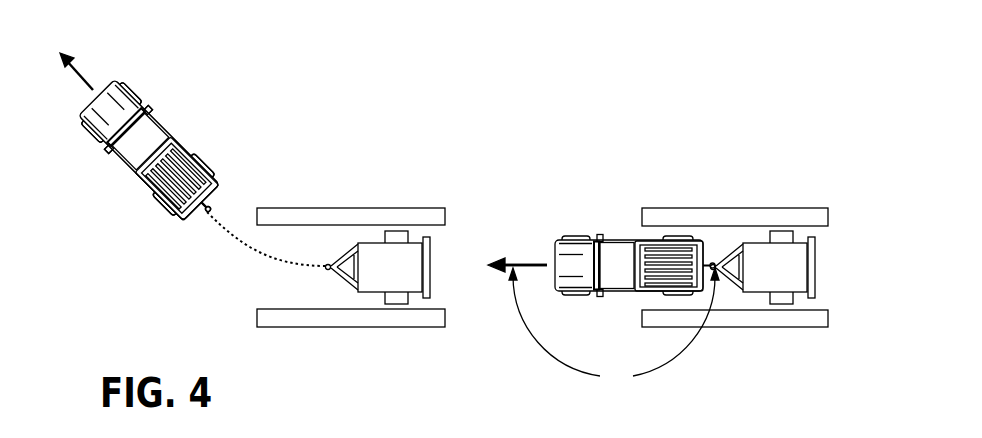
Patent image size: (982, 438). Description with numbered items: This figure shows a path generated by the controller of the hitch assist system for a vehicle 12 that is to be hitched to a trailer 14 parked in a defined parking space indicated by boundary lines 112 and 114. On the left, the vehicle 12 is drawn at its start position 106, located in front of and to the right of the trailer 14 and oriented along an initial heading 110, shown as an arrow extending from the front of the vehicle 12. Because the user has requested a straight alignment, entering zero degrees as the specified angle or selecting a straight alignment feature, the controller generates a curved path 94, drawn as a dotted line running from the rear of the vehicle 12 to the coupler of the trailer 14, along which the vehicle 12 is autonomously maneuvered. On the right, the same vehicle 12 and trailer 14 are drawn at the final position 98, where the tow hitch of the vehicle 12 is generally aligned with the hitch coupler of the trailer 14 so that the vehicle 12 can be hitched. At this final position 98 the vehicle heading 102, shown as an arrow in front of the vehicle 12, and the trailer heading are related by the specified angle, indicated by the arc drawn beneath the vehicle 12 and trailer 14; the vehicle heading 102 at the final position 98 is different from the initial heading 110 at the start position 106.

The vehicle 12 is at (183, 172).
The trailer 14 is at (377, 255).
The path 94 is at (247, 253).
The final position 98 is at (722, 245).
The vehicle heading 102 is at (520, 255).
The start position 106 is at (76, 154).
The initial heading 110 is at (87, 80).
The boundary line 112 is at (280, 212).
The boundary line 114 is at (312, 318).